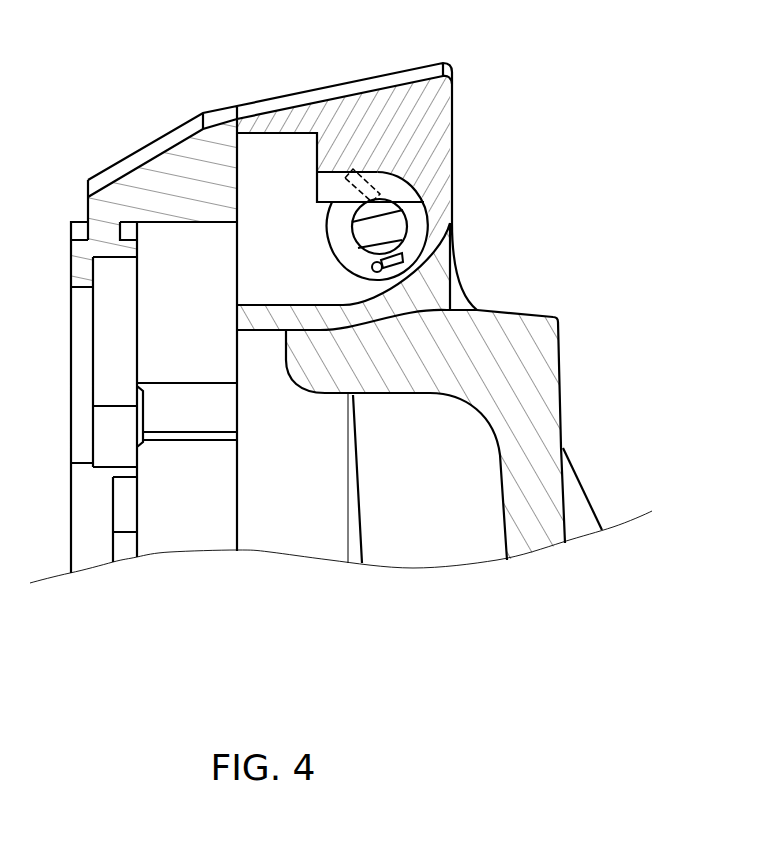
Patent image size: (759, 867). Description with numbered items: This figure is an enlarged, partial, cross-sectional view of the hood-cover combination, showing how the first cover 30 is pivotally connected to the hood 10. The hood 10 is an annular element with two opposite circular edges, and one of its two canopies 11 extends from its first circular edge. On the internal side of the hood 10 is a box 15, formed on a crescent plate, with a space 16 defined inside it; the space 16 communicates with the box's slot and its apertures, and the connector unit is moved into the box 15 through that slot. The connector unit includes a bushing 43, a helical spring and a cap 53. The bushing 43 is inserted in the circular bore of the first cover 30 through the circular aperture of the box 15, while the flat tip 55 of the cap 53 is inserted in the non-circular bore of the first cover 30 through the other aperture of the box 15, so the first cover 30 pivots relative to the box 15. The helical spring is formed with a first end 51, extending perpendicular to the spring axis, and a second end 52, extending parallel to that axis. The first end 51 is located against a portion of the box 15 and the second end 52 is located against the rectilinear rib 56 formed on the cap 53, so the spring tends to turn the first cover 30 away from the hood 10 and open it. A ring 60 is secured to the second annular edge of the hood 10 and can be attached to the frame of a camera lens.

The hood 10 is at (327, 93).
The canopy 11 is at (575, 510).
The box 15 is at (437, 138).
The space 16 is at (281, 155).
The first cover 30 is at (515, 397).
The bushing 43 is at (410, 232).
The first end of the helical spring 51 is at (369, 168).
The second end of the helical spring 52 is at (404, 283).
The cap 53 is at (398, 200).
The flat tip 55 is at (160, 197).
The rectilinear rib 56 is at (408, 258).
The ring 60 is at (162, 198).